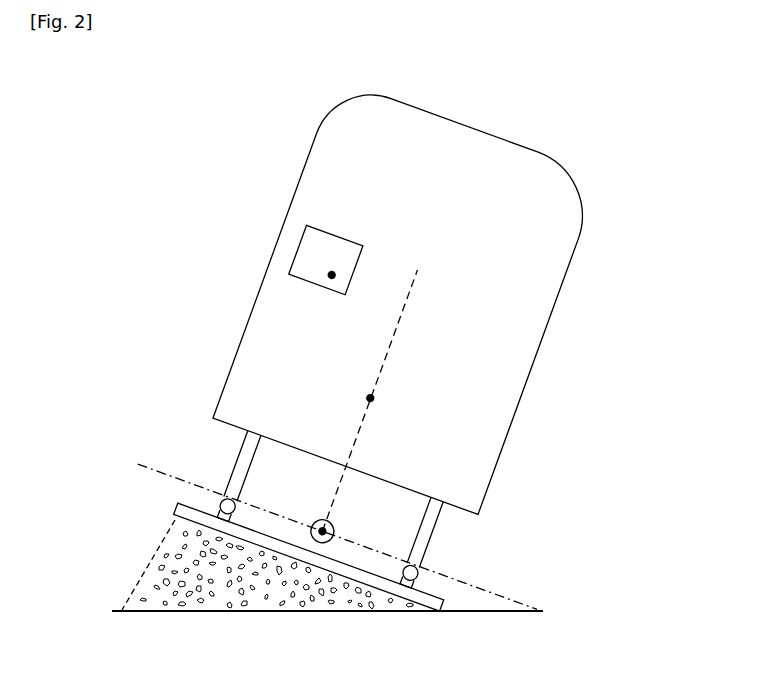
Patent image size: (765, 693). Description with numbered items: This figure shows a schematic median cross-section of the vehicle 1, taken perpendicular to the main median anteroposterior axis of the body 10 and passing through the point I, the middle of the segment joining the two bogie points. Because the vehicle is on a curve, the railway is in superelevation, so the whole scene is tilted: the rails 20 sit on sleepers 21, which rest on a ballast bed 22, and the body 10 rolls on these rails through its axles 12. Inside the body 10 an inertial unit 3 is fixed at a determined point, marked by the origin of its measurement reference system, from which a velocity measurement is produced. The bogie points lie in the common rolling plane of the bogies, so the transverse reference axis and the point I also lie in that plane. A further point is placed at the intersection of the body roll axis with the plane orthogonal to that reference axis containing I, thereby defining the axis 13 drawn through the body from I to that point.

The vehicle 1 is at (270, 192).
The inertial unit 3 is at (347, 236).
The body 10 is at (538, 352).
The axles 12 is at (437, 527).
The axis 13 is at (404, 309).
The rails 20 is at (219, 508).
The sleepers 21 is at (177, 508).
The ballast bed 22 is at (153, 580).